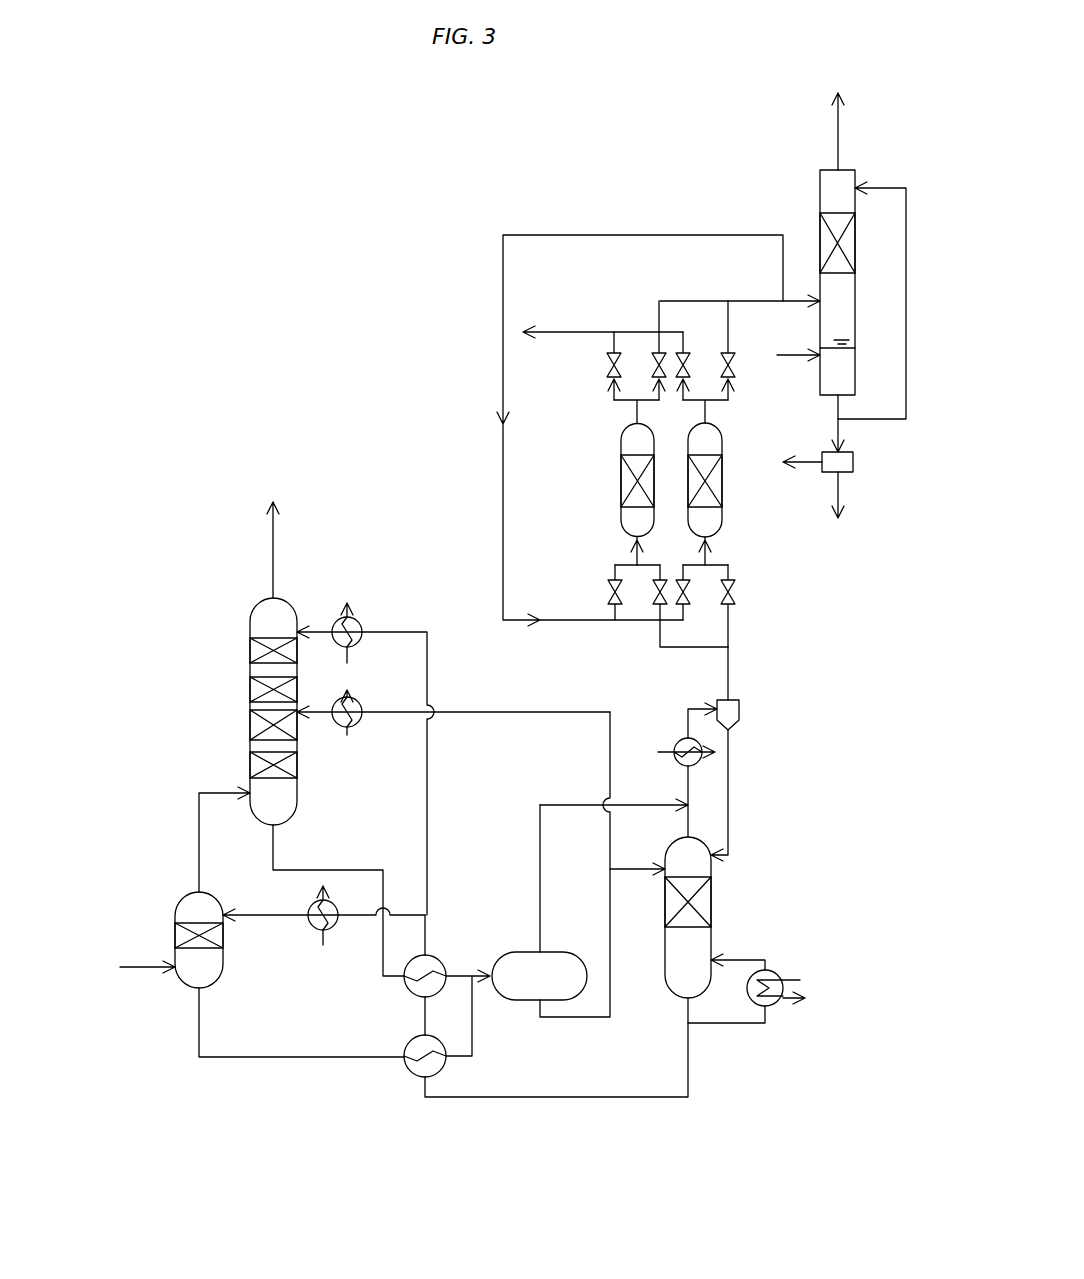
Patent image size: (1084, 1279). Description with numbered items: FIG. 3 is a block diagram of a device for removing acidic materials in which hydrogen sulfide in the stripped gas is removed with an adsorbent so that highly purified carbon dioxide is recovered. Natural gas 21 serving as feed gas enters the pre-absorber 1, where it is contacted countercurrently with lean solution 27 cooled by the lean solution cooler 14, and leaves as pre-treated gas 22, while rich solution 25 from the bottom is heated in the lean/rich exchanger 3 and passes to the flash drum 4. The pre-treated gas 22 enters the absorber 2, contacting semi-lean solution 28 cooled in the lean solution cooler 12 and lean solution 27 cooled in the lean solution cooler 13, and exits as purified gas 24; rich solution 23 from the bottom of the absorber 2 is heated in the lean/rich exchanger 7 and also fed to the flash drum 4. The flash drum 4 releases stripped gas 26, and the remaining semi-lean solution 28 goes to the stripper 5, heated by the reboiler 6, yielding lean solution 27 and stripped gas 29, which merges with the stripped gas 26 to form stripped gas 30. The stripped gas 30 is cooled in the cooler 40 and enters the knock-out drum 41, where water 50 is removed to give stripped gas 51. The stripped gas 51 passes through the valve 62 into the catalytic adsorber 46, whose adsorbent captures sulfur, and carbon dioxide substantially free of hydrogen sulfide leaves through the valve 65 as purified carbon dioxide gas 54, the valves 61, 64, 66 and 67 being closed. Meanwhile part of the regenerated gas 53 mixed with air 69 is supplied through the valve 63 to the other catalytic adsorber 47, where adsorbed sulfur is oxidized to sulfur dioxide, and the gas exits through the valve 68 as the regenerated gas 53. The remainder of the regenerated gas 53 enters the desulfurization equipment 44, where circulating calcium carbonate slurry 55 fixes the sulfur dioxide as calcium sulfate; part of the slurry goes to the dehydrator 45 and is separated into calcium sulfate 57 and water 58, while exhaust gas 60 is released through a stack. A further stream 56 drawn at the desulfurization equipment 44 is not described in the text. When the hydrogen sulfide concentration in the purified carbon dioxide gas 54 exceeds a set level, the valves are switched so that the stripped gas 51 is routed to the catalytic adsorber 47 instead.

The pre-absorber 1 is at (175, 916).
The absorber 2 is at (512, 952).
The lean/rich exchanger 3 is at (405, 1068).
The flash drum 4 is at (250, 632).
The stripper 5 is at (711, 932).
The reboiler 6 is at (780, 972).
The lean/rich exchanger 7 is at (405, 988).
The lean solution cooler 12 is at (362, 702).
The lean solution cooler 13 is at (360, 622).
The lean solution cooler 14 is at (306, 922).
The natural gas 21 is at (142, 965).
The pre-treated gas 22 is at (200, 840).
The rich solution 23 is at (350, 868).
The purified gas 24 is at (272, 556).
The rich solution 25 is at (258, 1058).
The stripped gas 26 is at (540, 852).
The lean solution 27 is at (550, 1098).
The semi-lean solution 28 is at (576, 1018).
The stripped gas 29 is at (688, 836).
The stripped gas 30 is at (688, 782).
The cooler 40 is at (680, 742).
The knock-out drum 41 is at (740, 710).
The desulfurization equipment 44 is at (820, 205).
The dehydrator 45 is at (855, 462).
The catalytic adsorber 46 is at (621, 482).
The catalytic adsorber 47 is at (722, 482).
The water 50 is at (728, 812).
The stripped gas 51 is at (728, 670).
The regenerated gas 53 is at (765, 300).
The purified carbon dioxide gas 54 is at (560, 330).
The calcium carbonate slurry 55 is at (783, 355).
The line 56 is at (906, 185).
The calcium sulfate 57 is at (808, 458).
The water 58 is at (840, 490).
The exhaust gas 60 is at (838, 140).
The valve 61 is at (612, 592).
The valve 62 is at (660, 612).
The valve 63 is at (685, 604).
The valve 64 is at (732, 592).
The valve 65 is at (612, 365).
The valve 66 is at (659, 350).
The valve 67 is at (685, 352).
The valve 68 is at (730, 372).
The air 69 is at (480, 620).